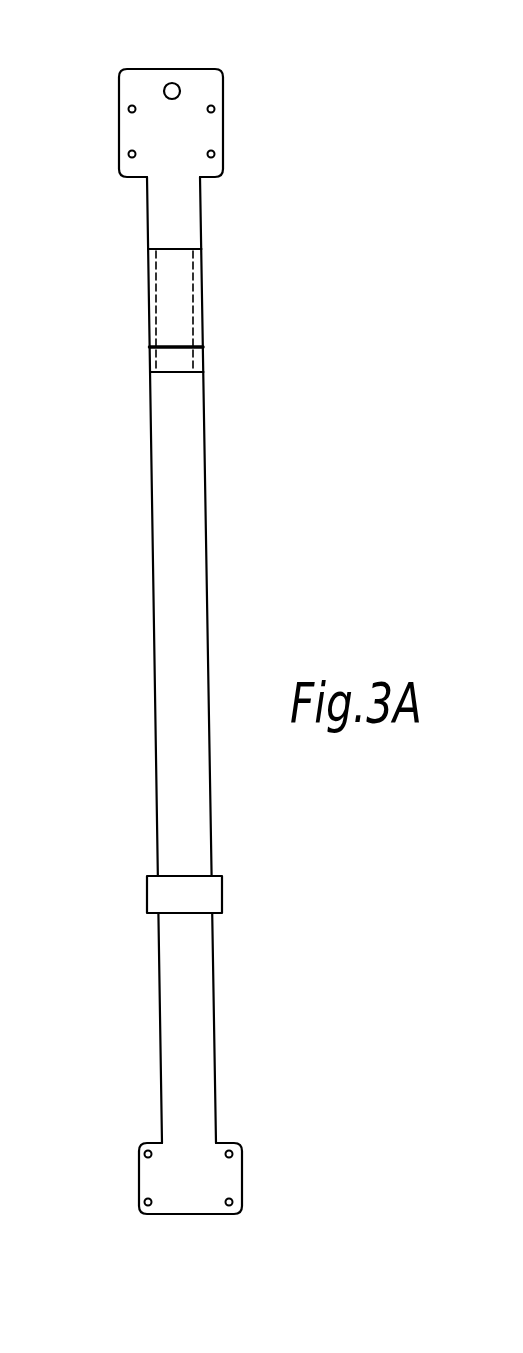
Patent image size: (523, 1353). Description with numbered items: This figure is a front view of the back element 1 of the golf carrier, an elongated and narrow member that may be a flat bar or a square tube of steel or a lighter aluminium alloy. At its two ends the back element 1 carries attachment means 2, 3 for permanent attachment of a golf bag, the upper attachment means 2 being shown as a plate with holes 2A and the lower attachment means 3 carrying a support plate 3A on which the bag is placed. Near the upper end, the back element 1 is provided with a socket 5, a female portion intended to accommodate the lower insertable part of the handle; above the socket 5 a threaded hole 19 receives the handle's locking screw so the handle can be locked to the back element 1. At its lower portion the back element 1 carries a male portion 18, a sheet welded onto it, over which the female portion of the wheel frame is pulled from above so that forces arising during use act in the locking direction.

The back element 1 is at (183, 556).
The upper attachment means 2 is at (200, 82).
The mounting holes of upper plate 2A is at (128, 109).
The threaded hole 19 is at (172, 83).
The socket 5 is at (180, 302).
The male portion 18 is at (165, 893).
The lower attachment means 3 is at (228, 1177).
The support plate 3A is at (142, 1156).